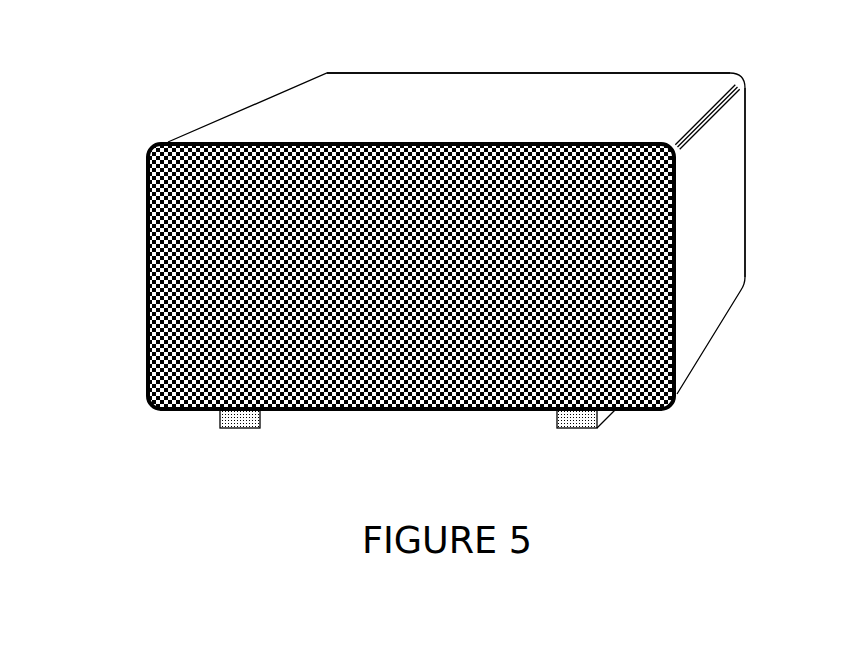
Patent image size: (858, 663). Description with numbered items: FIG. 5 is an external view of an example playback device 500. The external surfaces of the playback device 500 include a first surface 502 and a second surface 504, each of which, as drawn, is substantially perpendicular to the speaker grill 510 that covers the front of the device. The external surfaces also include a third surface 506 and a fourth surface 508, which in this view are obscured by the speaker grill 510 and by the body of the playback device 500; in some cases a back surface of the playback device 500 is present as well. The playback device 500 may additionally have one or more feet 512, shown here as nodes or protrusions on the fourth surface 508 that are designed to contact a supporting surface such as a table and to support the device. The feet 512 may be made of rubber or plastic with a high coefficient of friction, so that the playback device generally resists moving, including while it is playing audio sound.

The playback device 500 is at (185, 89).
The first surface 502 is at (482, 92).
The second surface 504 is at (708, 221).
The third surface 506 is at (122, 256).
The fourth surface 508 is at (443, 430).
The speaker grill 510 is at (635, 395).
The feet 512 is at (240, 428).